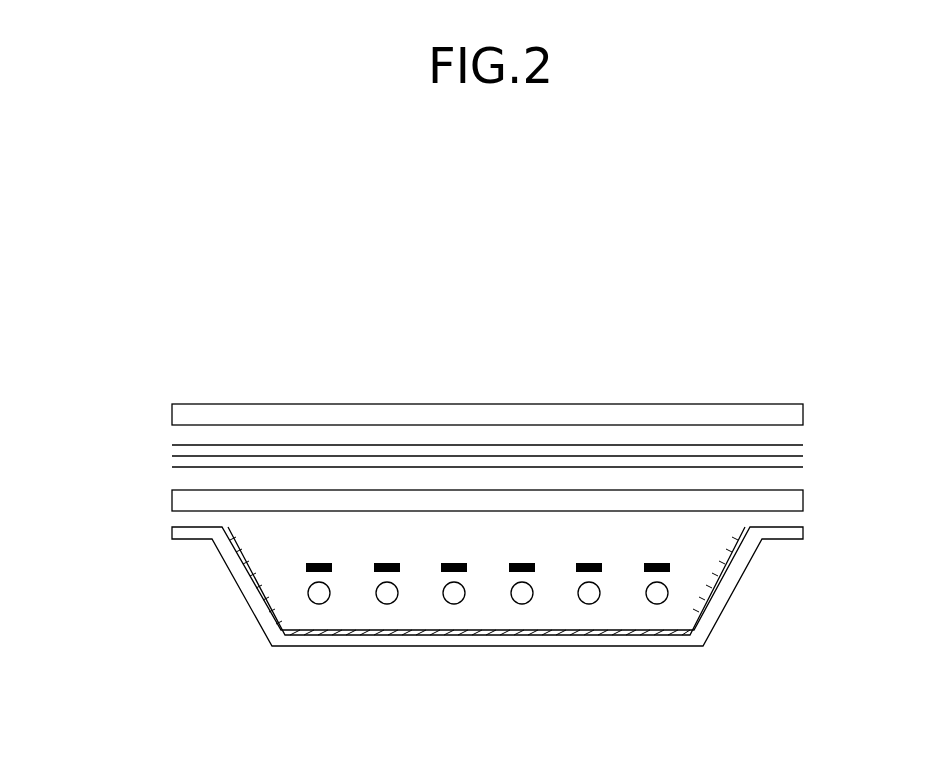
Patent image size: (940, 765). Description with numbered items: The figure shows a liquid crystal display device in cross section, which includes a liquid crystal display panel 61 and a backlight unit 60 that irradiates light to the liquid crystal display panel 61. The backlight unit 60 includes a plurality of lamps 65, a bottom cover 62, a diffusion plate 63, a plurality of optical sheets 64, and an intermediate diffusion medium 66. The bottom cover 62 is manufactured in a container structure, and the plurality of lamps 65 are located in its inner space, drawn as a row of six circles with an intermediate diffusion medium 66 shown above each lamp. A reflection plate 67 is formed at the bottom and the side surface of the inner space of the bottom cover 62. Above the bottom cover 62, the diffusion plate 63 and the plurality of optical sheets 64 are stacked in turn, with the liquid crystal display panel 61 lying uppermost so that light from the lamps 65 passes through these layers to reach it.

The backlight unit 60 is at (552, 552).
The liquid crystal display panel 61 is at (800, 413).
The bottom cover 62 is at (800, 529).
The diffusion plate 63 is at (800, 499).
The optical sheets 64 is at (820, 447).
The lamps 65 is at (589, 604).
The intermediate diffusion medium 66 is at (583, 565).
The reflection plate 67 is at (722, 583).